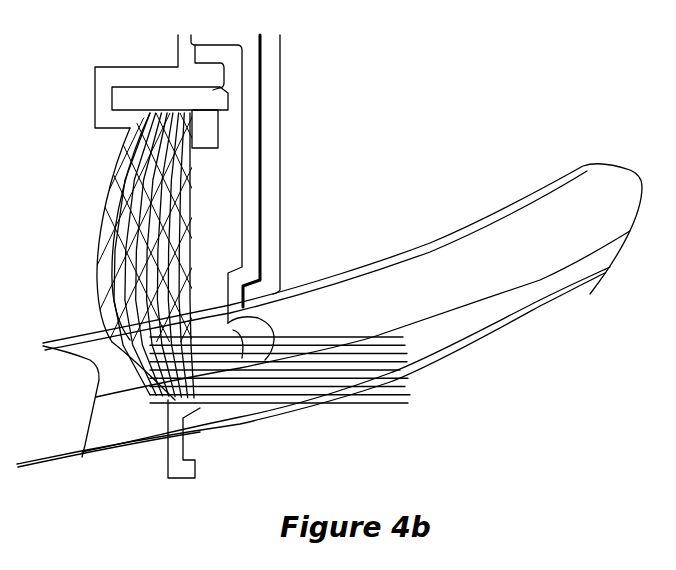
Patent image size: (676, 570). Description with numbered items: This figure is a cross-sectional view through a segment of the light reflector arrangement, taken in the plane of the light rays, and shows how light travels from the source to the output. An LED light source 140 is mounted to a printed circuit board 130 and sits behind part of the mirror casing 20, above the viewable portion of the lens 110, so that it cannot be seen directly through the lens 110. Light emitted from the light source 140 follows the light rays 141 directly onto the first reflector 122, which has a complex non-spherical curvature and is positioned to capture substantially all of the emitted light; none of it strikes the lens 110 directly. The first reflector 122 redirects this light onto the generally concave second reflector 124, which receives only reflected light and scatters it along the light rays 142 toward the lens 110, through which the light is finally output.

The mirror casing 20 is at (267, 215).
The lens 110 is at (548, 293).
The first reflector 122 is at (116, 166).
The second reflector 124 is at (127, 358).
The printed circuit board 130 is at (228, 105).
The LED light source 140 is at (222, 133).
The light rays 141 is at (110, 243).
The light rays 142 is at (375, 408).